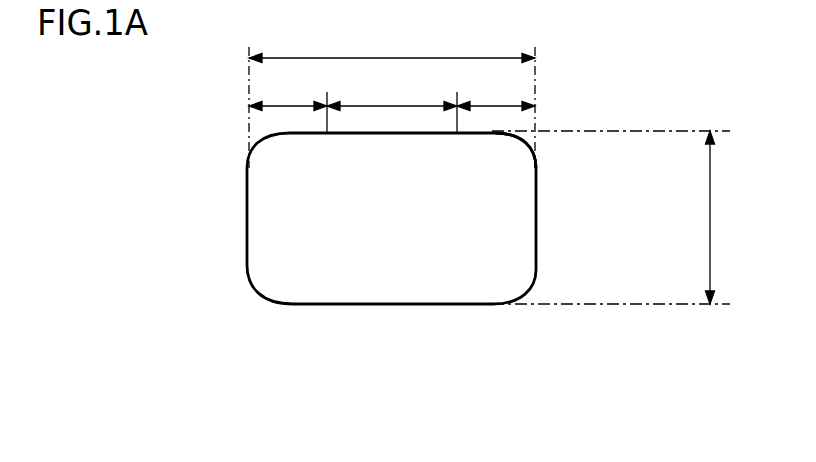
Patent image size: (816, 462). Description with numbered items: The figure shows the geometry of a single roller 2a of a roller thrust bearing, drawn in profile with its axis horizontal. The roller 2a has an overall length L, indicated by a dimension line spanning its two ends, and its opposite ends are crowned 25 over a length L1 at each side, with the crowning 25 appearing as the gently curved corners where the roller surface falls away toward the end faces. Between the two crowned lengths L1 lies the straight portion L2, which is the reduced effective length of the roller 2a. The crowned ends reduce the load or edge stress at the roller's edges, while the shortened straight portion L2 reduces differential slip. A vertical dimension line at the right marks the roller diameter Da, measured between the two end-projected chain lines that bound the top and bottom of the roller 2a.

The roller 2a is at (302, 290).
The crowning 25 is at (526, 142).
The roller length L is at (392, 45).
The crowned length L1 is at (392, 103).
The straight portion L2 is at (392, 92).
The roller diameter Da is at (636, 217).